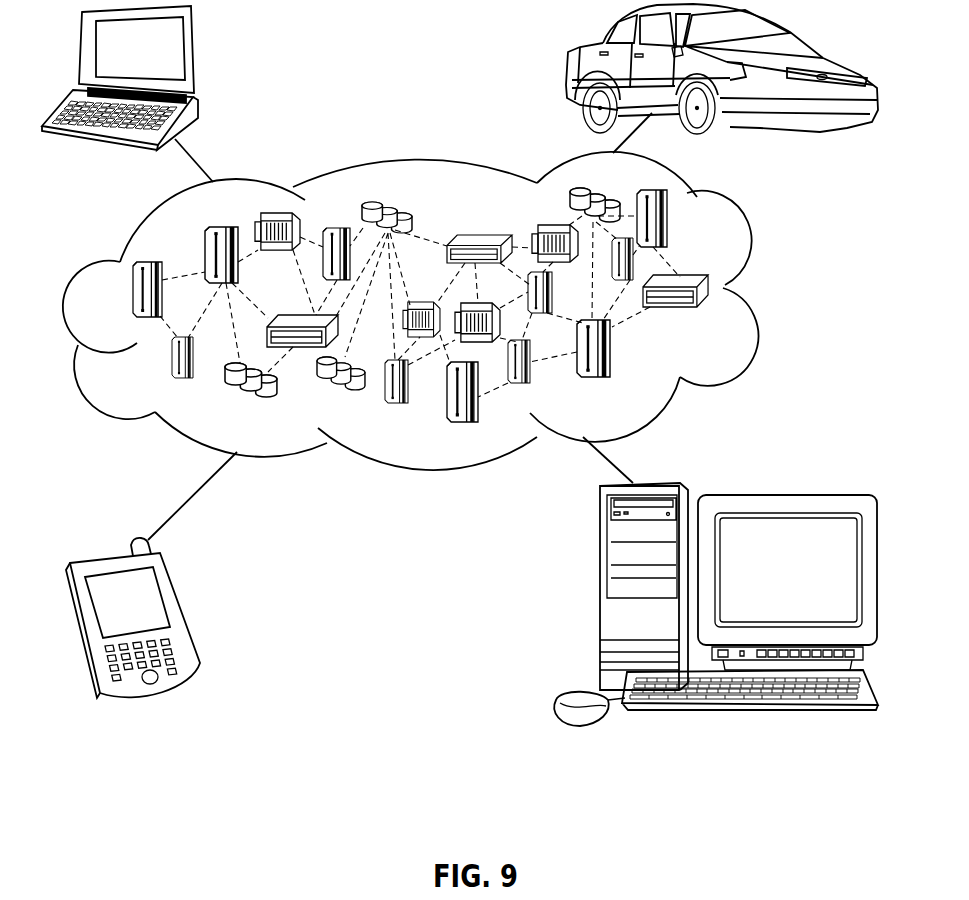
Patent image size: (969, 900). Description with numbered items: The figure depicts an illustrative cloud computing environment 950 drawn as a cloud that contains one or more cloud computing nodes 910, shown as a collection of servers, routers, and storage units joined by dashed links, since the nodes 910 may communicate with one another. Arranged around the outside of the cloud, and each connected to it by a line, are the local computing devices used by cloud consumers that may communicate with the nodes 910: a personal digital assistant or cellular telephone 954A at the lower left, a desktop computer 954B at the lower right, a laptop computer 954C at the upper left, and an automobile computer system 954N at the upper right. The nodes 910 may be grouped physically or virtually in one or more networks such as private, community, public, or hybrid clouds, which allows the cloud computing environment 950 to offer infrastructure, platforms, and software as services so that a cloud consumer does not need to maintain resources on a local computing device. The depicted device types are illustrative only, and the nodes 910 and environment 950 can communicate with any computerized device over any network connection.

The cloud computing environment 950 is at (752, 252).
The cloud computing nodes 910 is at (746, 312).
The laptop computer 954C is at (192, 58).
The automobile computer system 954N is at (566, 62).
The personal digital assistant (PDA) or cellular telephone 954A is at (183, 613).
The desktop computer 954B is at (600, 592).